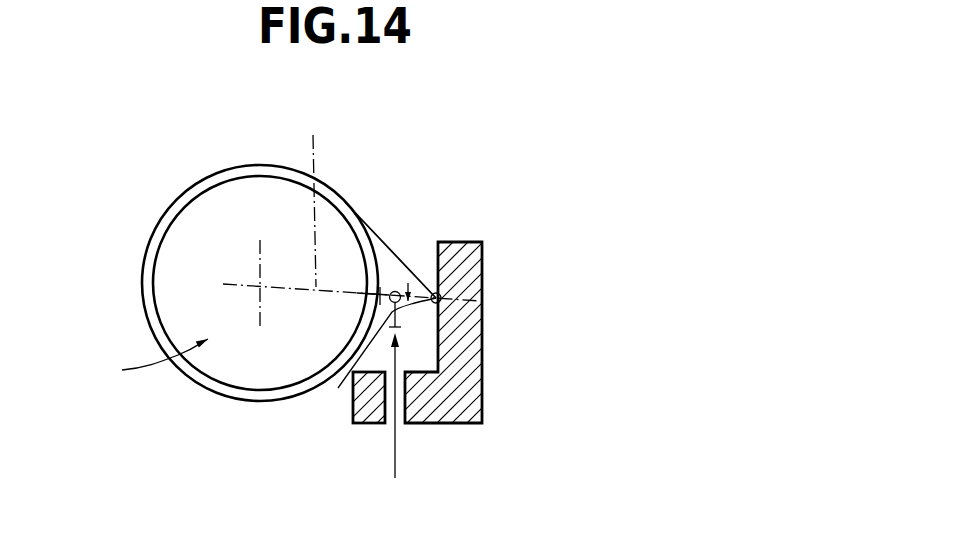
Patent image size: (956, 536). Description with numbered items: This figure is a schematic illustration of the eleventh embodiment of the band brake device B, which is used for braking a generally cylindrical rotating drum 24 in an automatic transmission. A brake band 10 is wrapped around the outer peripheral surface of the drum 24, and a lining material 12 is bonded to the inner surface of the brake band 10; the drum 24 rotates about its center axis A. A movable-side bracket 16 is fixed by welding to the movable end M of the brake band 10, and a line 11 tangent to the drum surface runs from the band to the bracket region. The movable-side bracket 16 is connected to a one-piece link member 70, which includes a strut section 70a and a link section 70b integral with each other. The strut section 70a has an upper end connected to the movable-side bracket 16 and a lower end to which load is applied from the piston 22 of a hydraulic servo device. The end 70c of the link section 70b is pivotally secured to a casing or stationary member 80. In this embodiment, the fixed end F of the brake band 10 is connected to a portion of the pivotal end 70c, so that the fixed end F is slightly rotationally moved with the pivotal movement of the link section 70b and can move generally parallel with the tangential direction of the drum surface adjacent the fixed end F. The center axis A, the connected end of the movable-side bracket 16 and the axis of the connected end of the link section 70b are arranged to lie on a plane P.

The brake band 10 is at (187, 376).
The tangent line of drum surface 11 is at (343, 197).
The lining material 12 is at (243, 392).
The movable-side bracket 16 is at (385, 288).
The piston 22 is at (395, 450).
The rotating drum 24 is at (145, 363).
The one-piece link member 70 is at (408, 283).
The strut section 70a is at (338, 388).
The link section 70b is at (438, 303).
The pivotal end 70c is at (440, 293).
The casing 80 is at (482, 367).
The center axis A is at (260, 285).
The band brake device B is at (395, 142).
The fixed end F is at (436, 292).
The movable end M is at (366, 294).
The plane P is at (317, 197).